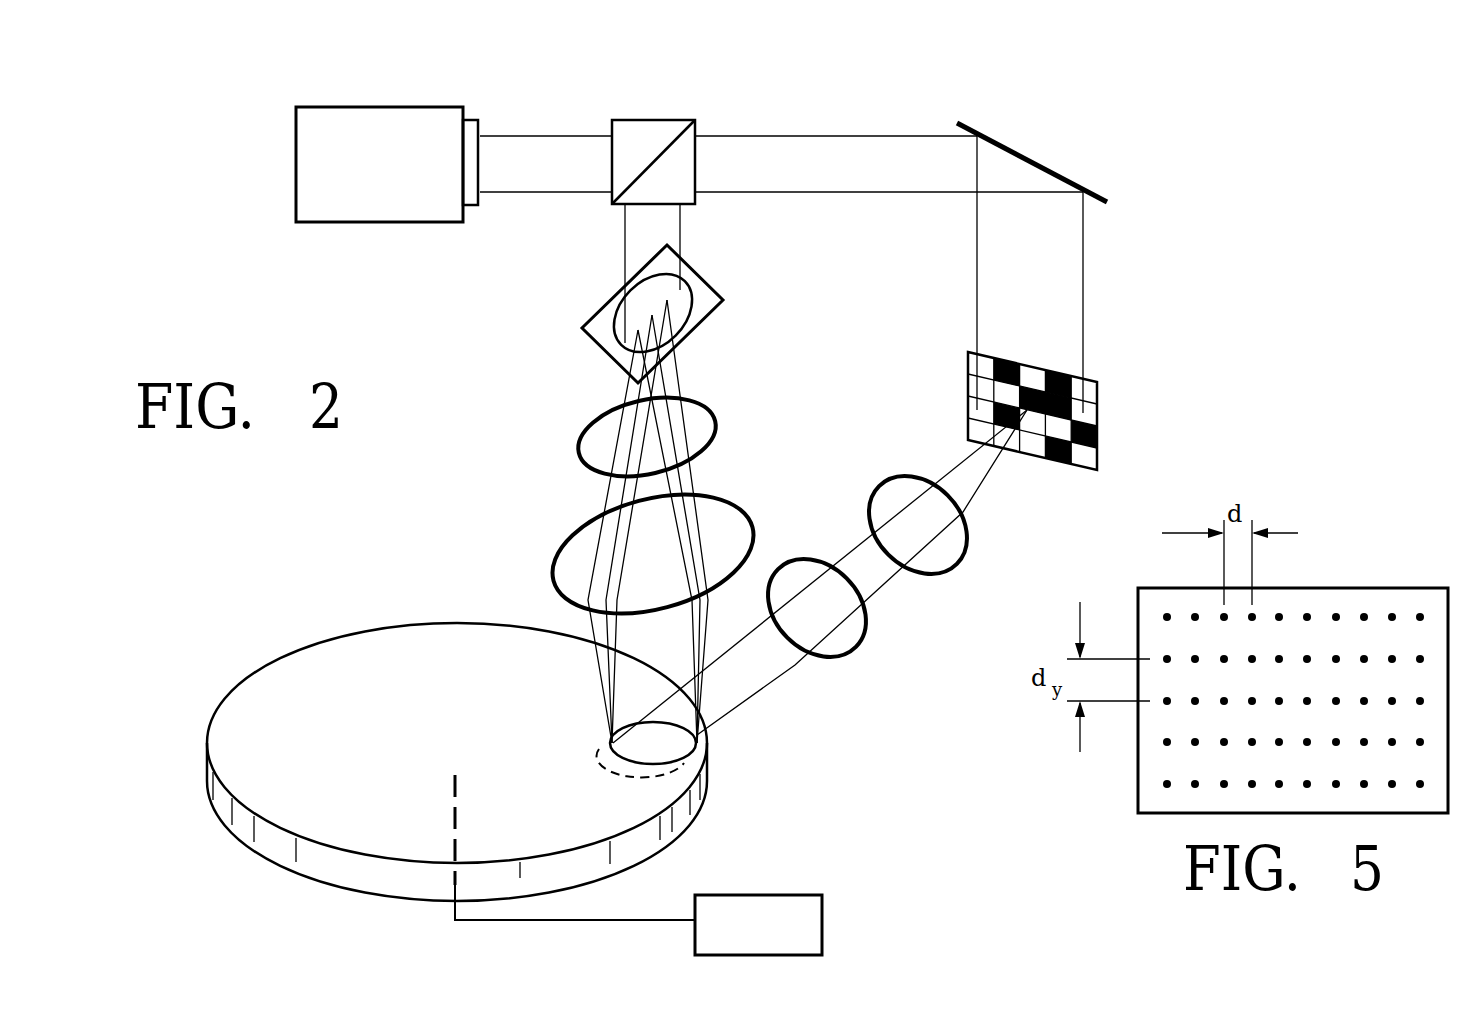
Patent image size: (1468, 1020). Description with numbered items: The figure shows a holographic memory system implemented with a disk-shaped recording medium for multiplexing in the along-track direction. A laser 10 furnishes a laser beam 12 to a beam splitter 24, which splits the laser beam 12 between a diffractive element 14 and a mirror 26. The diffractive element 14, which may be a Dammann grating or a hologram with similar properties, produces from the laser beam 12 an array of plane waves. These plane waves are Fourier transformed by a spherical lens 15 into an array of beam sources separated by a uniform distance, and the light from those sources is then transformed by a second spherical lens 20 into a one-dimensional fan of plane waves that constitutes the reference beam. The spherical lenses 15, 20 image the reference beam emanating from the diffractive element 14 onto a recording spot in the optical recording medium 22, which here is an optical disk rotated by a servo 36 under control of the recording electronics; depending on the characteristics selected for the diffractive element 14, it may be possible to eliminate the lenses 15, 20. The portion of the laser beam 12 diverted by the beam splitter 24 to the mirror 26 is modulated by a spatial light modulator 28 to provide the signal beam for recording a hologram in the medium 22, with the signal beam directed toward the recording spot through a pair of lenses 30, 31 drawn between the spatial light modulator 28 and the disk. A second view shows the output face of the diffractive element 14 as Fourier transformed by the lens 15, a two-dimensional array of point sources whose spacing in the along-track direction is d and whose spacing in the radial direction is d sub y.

In FIG. 2, the laser 10 is at (375, 223).
In FIG. 2, the laser beam 12 is at (541, 134).
In FIG. 2, the diffractive element 14 is at (592, 316).
In FIG. 5, the diffractive element 14 is at (1413, 588).
In FIG. 2, the spherical lens 15 is at (580, 440).
In FIG. 2, the spherical lens 20 is at (562, 544).
In FIG. 2, the optical recording medium 22 is at (294, 652).
In FIG. 2, the beam splitter 24 is at (645, 120).
In FIG. 2, the mirror 26 is at (1028, 158).
In FIG. 2, the spatial light modulator 28 is at (968, 386).
In FIG. 2, the lens 30 is at (874, 482).
In FIG. 2, the lens 31 is at (868, 642).
In FIG. 2, the servo 36 is at (793, 895).